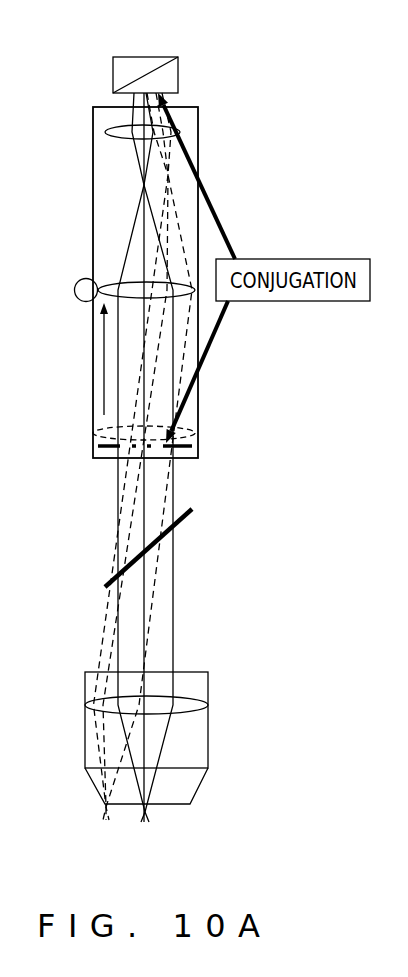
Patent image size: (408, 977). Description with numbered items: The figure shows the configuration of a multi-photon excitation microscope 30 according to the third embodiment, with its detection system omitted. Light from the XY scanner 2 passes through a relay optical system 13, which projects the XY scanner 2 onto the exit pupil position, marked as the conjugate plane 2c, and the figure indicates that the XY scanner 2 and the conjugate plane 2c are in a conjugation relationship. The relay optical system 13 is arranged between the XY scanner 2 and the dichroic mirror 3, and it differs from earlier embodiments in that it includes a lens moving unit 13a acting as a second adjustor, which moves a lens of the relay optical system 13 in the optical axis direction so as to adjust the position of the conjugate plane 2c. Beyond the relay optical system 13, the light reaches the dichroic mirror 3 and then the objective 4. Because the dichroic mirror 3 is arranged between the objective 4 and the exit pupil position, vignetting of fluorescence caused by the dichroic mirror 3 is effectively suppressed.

The multi-photon excitation microscope 30 is at (292, 33).
The XY scanner 2 is at (178, 68).
The relay optical system 13 is at (93, 162).
The lens moving unit 13a is at (78, 298).
The conjugate plane 2c is at (193, 447).
The dichroic mirror 3 is at (183, 518).
The objective 4 is at (208, 688).